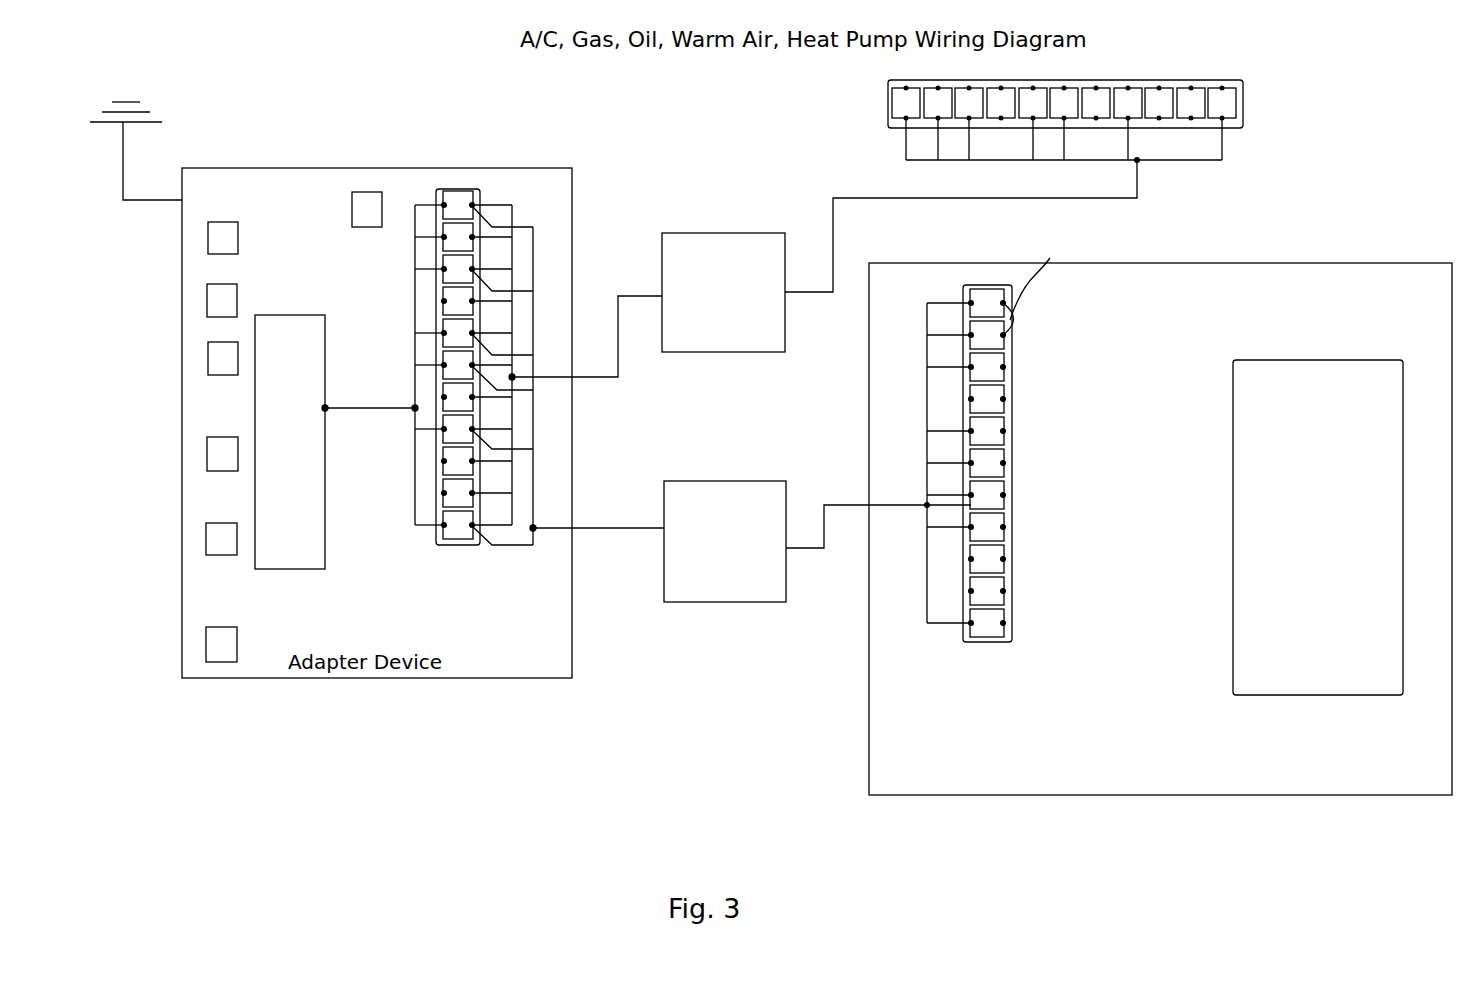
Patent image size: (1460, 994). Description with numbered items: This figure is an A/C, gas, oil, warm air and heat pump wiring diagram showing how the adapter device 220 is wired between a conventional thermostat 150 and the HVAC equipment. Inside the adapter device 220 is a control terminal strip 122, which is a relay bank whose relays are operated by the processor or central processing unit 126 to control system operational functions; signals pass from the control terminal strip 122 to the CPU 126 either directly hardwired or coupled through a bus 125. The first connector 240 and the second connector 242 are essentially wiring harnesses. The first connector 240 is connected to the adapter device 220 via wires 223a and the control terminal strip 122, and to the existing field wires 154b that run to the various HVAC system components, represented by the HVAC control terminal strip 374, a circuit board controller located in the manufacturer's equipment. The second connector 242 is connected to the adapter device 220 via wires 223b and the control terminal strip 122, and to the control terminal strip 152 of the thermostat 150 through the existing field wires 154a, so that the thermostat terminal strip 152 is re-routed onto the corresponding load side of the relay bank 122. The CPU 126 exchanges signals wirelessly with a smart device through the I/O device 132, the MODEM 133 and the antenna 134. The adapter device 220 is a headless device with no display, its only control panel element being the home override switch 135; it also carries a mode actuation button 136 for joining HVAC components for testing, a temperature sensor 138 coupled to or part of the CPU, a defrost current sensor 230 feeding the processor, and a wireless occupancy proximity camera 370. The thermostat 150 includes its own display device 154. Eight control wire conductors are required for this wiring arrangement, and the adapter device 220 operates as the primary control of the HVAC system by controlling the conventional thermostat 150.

The control terminal strip 122 is at (470, 195).
The bus 125 is at (358, 410).
The central processing unit 126 is at (325, 340).
The I/O device 132 is at (238, 232).
The MODEM 133 is at (237, 296).
The antenna 134 is at (140, 205).
The home override switch 135 is at (208, 360).
The mode actuation button 136 is at (206, 643).
The temperature sensor 138 is at (207, 452).
The conventional thermostat 150 is at (1378, 262).
The control terminal strip of thermostat 152 is at (983, 642).
The display device 154 is at (1233, 375).
The existing field wires 154a is at (840, 505).
The existing field wires 154b is at (833, 208).
The adapter device 220 is at (438, 168).
The wires 223a is at (612, 380).
The wires 223b is at (614, 530).
The defrost current sensor 230 is at (360, 192).
The first connector 240 is at (755, 352).
The second connector 242 is at (748, 602).
The wireless occupancy proximity camera 370 is at (206, 538).
The HVAC control terminal strip 374 is at (888, 92).